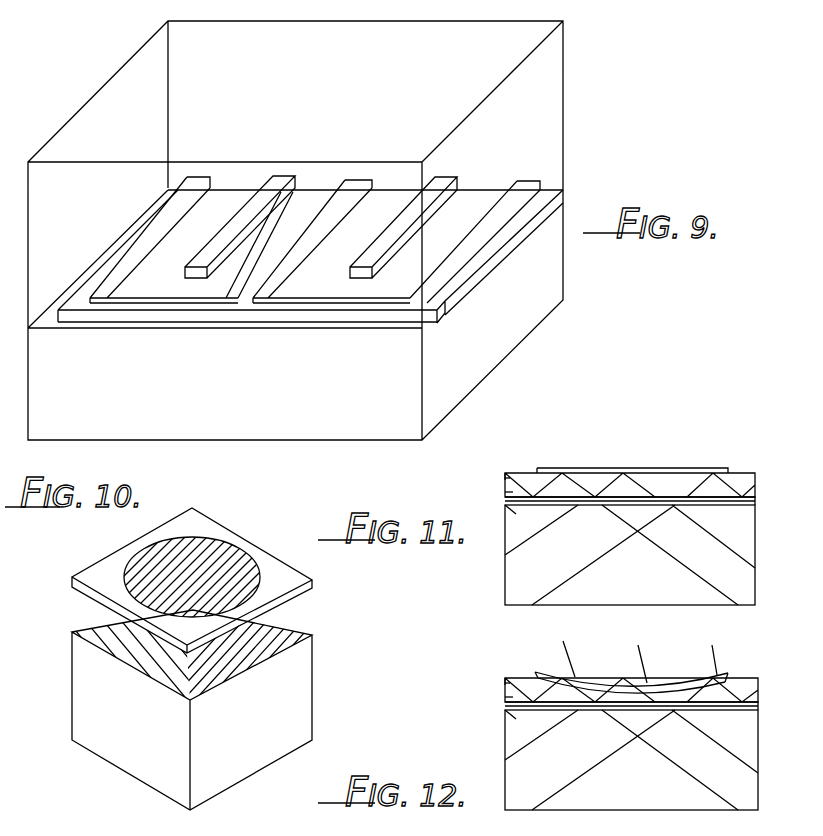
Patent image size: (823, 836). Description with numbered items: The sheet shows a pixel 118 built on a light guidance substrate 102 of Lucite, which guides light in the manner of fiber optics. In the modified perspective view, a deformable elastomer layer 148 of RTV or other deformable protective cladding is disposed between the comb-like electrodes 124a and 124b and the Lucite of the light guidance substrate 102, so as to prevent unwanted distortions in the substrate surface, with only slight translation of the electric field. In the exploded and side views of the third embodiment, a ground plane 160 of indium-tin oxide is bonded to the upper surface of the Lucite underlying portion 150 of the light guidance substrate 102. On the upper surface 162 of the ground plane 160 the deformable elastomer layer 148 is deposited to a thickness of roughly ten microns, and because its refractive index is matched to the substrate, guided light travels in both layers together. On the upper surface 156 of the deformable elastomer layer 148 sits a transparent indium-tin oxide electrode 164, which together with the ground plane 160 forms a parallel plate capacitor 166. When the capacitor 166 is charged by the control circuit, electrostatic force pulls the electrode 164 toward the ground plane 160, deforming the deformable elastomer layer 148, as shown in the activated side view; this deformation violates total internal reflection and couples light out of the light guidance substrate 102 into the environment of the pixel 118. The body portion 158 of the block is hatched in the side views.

In FIG. 10, the light guidance substrate 102 is at (327, 688).
In FIG. 10, the pixel 118 is at (232, 518).
In FIG. 11, the pixel 118 is at (709, 458).
In FIG. 12, the pixel 118 is at (730, 663).
In FIG. 9, the comb-like electrode 124a is at (163, 207).
In FIG. 9, the comb-like electrode 124b is at (273, 180).
In FIG. 9, the deformable elastomer layer 148 is at (480, 275).
In FIG. 10, the deformable elastomer layer 148 is at (312, 583).
In FIG. 11, the deformable elastomer layer 148 is at (755, 478).
In FIG. 12, the deformable elastomer layer 148 is at (758, 682).
In FIG. 9, the Lucite underlying portion 150 is at (490, 358).
In FIG. 10, the Lucite underlying portion 150 is at (265, 737).
In FIG. 11, the Lucite underlying portion 150 is at (645, 572).
In FIG. 12, the Lucite underlying portion 150 is at (645, 777).
In FIG. 10, the upper surface of the deformable elastomer layer 156 is at (83, 572).
In FIG. 11, the upper surface of the deformable elastomer layer 156 is at (518, 473).
In FIG. 12, the upper surface of the deformable elastomer layer 156 is at (518, 678).
In FIG. 11, the block body 158 is at (700, 575).
In FIG. 12, the block body 158 is at (700, 780).
In FIG. 10, the ground plane 160 is at (291, 624).
In FIG. 11, the ground plane 160 is at (733, 497).
In FIG. 12, the ground plane 160 is at (733, 702).
In FIG. 11, the upper surface of the ground plane 162 is at (513, 492).
In FIG. 12, the upper surface of the ground plane 162 is at (513, 697).
In FIG. 10, the electrode 164 is at (233, 555).
In FIG. 11, the electrode 164 is at (613, 468).
In FIG. 12, the electrode 164 is at (583, 678).
In FIG. 11, the capacitor 166 is at (505, 477).
In FIG. 12, the capacitor 166 is at (505, 682).